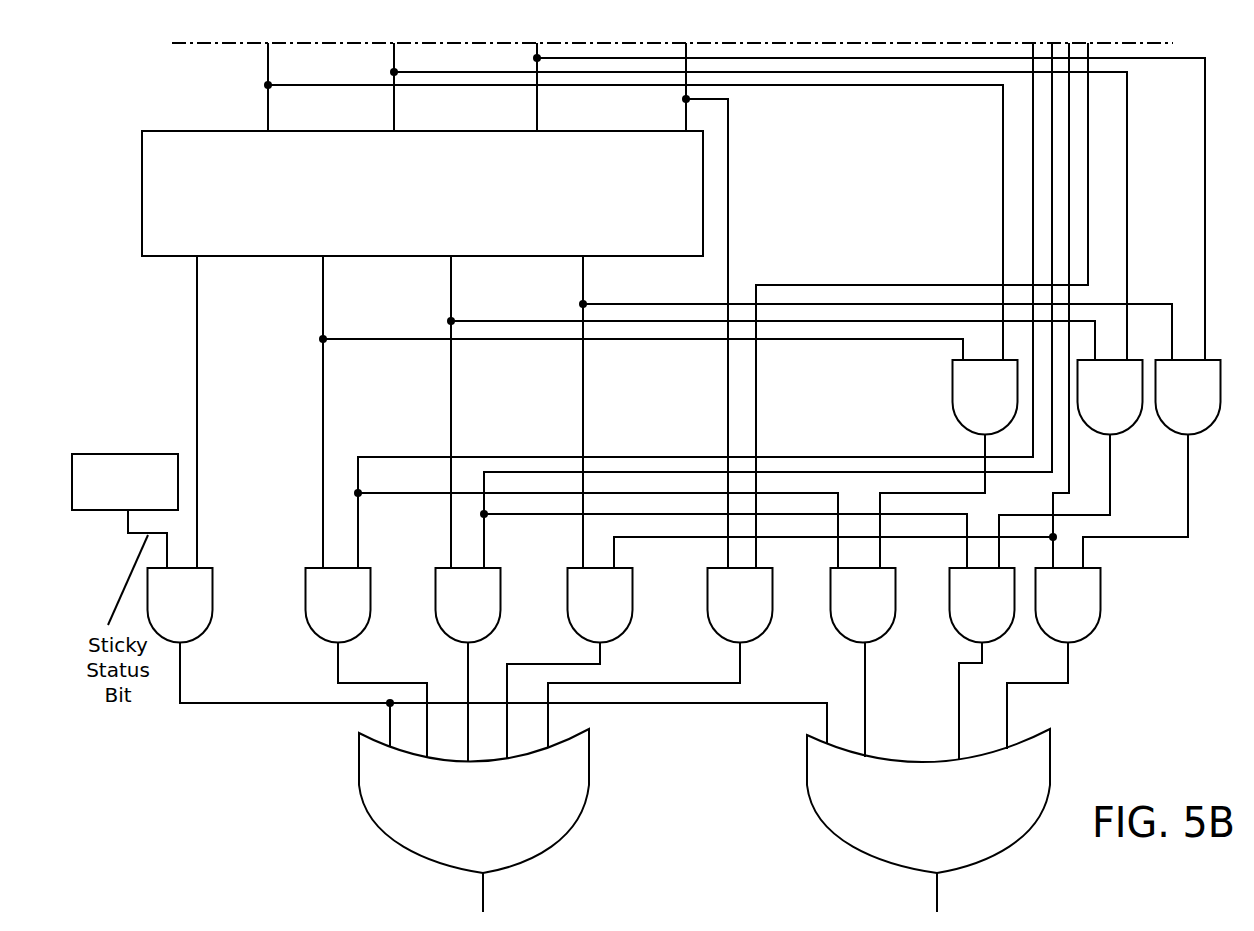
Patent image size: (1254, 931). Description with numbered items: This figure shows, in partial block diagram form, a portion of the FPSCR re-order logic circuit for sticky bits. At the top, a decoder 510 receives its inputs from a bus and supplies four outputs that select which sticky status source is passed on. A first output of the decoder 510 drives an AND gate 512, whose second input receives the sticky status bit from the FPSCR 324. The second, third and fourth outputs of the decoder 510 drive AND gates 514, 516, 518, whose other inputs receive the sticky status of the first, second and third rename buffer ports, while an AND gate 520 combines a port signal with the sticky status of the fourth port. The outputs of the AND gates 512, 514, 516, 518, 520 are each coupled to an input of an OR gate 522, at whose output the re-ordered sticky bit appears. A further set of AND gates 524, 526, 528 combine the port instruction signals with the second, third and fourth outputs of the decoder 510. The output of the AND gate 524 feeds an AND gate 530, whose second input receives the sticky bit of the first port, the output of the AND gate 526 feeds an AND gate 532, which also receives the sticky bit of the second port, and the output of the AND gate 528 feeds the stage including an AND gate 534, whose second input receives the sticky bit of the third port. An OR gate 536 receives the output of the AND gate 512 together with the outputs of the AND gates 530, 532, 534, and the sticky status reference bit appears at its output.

The decoder 510 is at (141, 177).
The FPSCR 324 is at (113, 452).
The AND gate 512 is at (160, 614).
The AND gate 514 is at (318, 614).
The AND gate 516 is at (448, 614).
The AND gate 518 is at (580, 614).
The AND gate 520 is at (720, 614).
The OR gate 522 is at (456, 828).
The AND gate 524 is at (965, 406).
The AND gate 526 is at (1090, 406).
The AND gate 528 is at (1168, 406).
The AND gate 530 is at (843, 614).
The AND gate 532 is at (962, 614).
The AND gate 534 is at (1048, 614).
The OR gate 536 is at (913, 828).